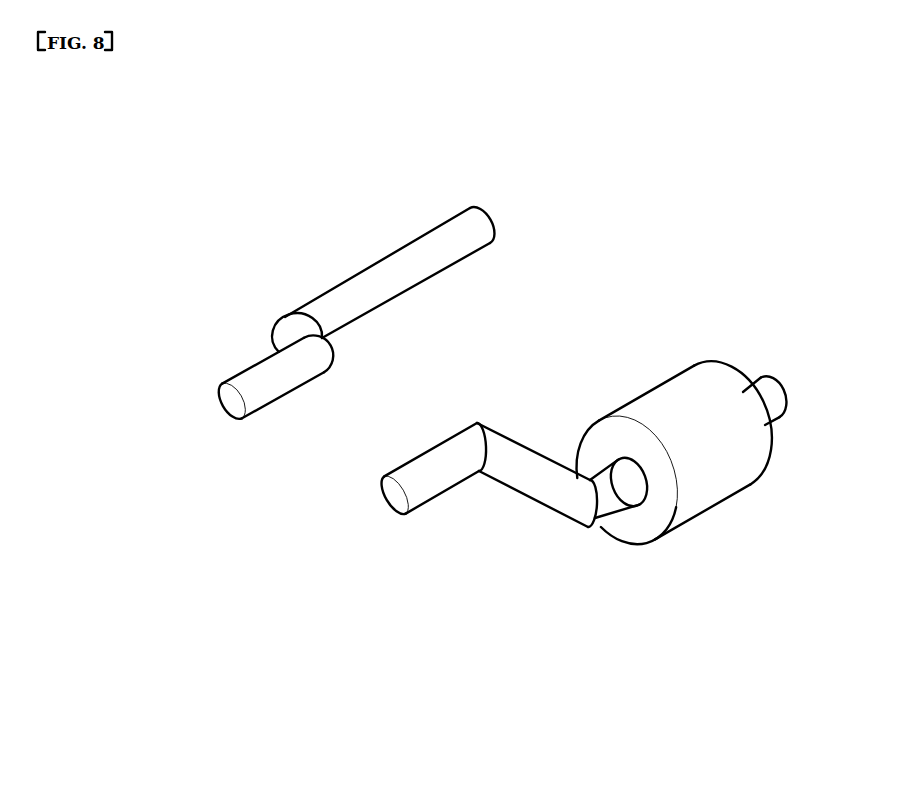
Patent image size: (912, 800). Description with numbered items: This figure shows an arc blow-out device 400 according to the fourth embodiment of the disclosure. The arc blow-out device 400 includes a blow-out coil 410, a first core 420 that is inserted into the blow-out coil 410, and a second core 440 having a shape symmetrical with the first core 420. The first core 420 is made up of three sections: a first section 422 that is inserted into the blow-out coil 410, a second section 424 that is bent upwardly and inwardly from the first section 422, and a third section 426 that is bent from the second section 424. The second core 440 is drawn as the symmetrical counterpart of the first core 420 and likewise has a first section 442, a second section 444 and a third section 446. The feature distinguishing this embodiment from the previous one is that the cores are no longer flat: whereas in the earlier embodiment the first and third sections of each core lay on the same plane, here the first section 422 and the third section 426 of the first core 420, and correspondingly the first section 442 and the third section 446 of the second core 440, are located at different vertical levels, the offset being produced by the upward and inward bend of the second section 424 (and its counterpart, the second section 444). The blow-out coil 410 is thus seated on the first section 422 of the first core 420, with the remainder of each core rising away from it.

The arc blow-out device 400 is at (623, 195).
The blow-out coil 410 is at (712, 485).
The first core 420 is at (660, 602).
The first section 422 is at (610, 500).
The second section 424 is at (538, 487).
The third section 426 is at (435, 483).
The second core 440 is at (265, 210).
The first section 442 is at (348, 287).
The second section 444 is at (283, 327).
The third section 446 is at (248, 373).